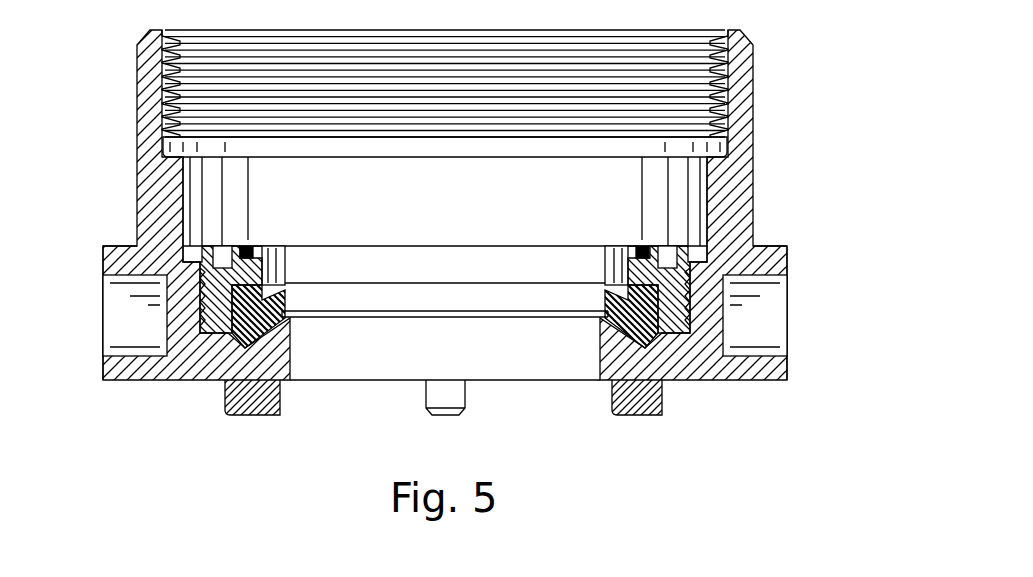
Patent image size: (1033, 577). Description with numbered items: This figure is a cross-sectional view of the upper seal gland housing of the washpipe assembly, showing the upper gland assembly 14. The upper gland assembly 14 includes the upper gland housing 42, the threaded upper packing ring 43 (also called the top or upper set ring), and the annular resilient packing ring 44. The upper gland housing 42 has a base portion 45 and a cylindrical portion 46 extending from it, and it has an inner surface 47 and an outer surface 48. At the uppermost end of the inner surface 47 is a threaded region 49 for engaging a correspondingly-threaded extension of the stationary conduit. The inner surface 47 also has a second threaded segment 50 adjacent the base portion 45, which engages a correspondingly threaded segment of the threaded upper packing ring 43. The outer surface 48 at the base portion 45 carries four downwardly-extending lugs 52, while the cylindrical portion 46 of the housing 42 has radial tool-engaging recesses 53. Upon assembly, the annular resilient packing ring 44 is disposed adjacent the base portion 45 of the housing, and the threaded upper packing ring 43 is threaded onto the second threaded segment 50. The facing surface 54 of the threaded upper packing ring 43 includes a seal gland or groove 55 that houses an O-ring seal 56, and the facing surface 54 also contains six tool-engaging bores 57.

The upper gland assembly 14 is at (790, 119).
The upper gland housing 42 is at (740, 163).
The threaded upper packing ring 43 is at (685, 330).
The annular resilient packing ring 44 is at (685, 365).
The base portion 45 is at (765, 262).
The cylindrical portion 46 is at (745, 52).
The inner surface 47 is at (197, 180).
The outer surface 48 is at (103, 270).
The threaded region 49 is at (180, 65).
The second threaded segment 50 is at (215, 325).
The downwardly-extending lugs 52 is at (265, 418).
The radial tool-engaging recesses 53 is at (130, 320).
The facing surface 54 is at (560, 245).
The seal gland or groove 55 is at (638, 246).
The O-ring seal 56 is at (648, 250).
The tool-engaging bores 57 is at (225, 258).